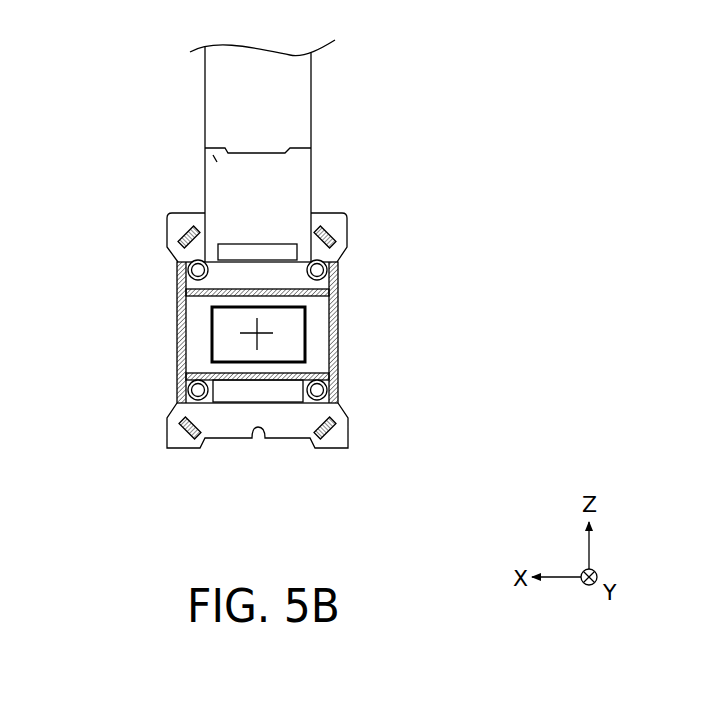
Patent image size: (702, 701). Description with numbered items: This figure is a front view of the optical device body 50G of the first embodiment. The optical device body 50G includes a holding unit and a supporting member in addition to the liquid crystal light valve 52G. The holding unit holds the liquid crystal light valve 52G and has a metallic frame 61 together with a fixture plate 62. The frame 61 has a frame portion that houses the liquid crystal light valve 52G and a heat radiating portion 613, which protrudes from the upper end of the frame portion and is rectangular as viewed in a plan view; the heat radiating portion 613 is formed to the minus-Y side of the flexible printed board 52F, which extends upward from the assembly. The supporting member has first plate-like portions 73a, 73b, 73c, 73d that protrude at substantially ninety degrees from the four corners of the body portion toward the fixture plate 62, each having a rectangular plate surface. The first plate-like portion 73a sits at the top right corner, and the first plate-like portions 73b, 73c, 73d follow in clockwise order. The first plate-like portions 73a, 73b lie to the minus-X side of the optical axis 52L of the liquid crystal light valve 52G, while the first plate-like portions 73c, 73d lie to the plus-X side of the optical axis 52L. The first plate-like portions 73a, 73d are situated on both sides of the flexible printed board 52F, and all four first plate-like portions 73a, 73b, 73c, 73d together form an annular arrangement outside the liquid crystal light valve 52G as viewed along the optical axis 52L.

The optical device body 50G is at (258, 278).
The flexible printed board 52F is at (302, 73).
The heat radiating portion 613 is at (215, 159).
The fixture plate 62 is at (340, 230).
The frame 61 is at (314, 310).
The liquid crystal light valve 52G is at (288, 347).
The optical axis 52L is at (256, 334).
The first plate-like portion 73a is at (332, 222).
The first plate-like portion 73b is at (332, 442).
The first plate-like portion 73c is at (185, 442).
The first plate-like portion 73d is at (185, 226).